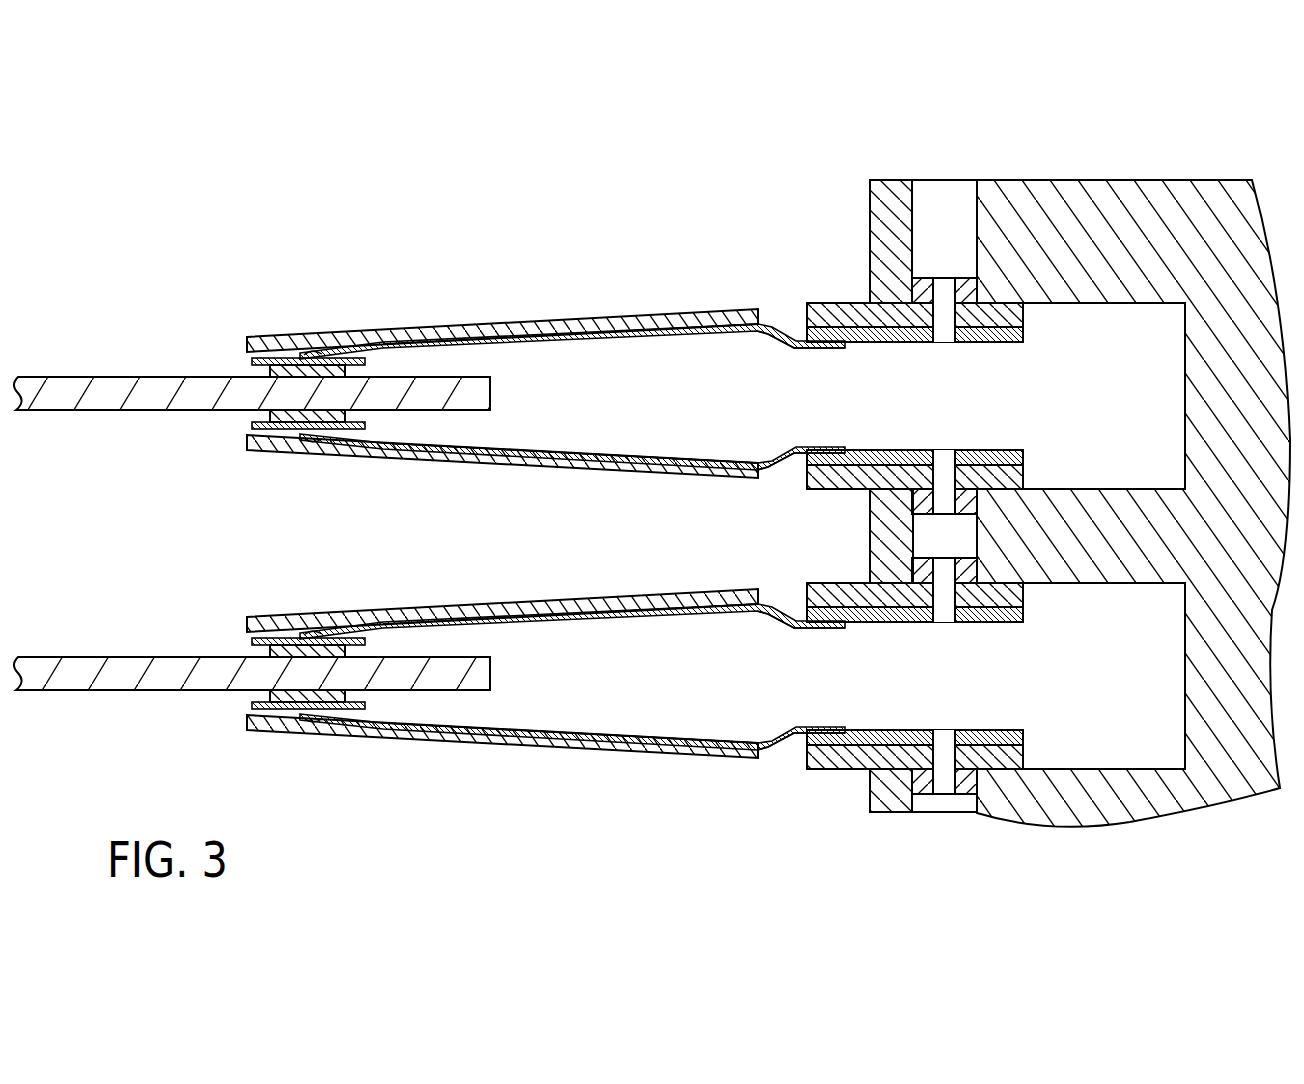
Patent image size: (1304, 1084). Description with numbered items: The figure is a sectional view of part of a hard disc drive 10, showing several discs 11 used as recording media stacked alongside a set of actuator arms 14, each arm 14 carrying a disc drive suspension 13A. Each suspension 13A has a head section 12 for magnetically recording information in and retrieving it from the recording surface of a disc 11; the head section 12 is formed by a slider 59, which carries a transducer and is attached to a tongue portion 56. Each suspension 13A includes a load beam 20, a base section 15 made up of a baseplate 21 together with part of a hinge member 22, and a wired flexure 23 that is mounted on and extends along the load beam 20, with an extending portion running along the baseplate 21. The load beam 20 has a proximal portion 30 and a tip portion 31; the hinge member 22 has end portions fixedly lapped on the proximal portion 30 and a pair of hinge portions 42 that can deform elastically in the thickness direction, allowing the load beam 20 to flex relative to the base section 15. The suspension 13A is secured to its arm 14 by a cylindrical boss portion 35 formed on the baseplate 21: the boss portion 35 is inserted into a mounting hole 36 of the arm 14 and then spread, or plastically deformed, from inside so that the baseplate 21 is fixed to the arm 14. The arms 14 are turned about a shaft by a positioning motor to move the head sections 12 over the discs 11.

The hard disc drive 10 is at (1116, 138).
The disc 11 is at (47, 377).
The head section 12 is at (495, 523).
The disc drive suspension 13A is at (593, 290).
The arm 14 is at (1030, 184).
The base section 15 is at (972, 352).
The load beam 20 is at (492, 324).
The baseplate 21 is at (818, 306).
The hinge member 22 is at (875, 344).
The wired flexure 23 is at (556, 343).
The proximal portion 30 is at (697, 311).
The tip portion 31 is at (300, 336).
The boss portion 35 is at (966, 290).
The mounting hole 36 is at (916, 214).
The hinge portion 42 is at (784, 330).
The tongue portion 56 is at (376, 352).
The slider 59 is at (268, 364).